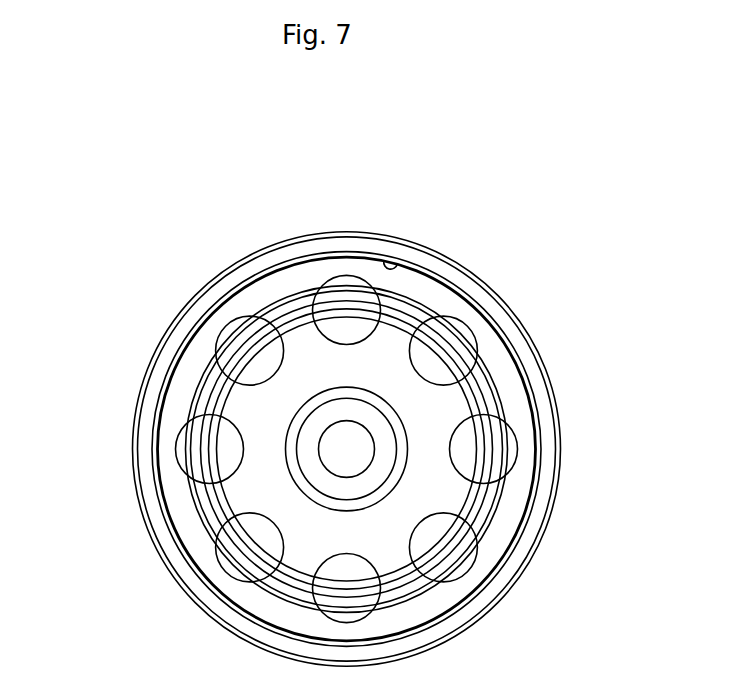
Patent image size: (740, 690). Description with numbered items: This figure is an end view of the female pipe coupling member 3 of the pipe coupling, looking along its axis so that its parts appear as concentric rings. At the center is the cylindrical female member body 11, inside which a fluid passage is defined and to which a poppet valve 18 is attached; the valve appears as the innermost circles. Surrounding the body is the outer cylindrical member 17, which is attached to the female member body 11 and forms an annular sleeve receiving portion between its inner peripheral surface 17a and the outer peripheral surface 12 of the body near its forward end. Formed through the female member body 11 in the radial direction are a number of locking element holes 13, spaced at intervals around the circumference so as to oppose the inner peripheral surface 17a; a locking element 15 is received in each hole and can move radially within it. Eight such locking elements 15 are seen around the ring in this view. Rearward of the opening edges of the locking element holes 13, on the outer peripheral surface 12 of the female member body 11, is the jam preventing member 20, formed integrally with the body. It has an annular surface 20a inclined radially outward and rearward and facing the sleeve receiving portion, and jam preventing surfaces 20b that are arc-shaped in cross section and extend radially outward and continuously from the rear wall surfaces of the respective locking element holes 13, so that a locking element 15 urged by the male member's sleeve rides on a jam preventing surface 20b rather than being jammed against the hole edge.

The female pipe coupling member 3 is at (272, 208).
The female member body 11 is at (290, 325).
The outer peripheral surface 12 is at (548, 342).
The locking element holes 13 is at (262, 333).
The locking elements 15 is at (228, 448).
The outer cylindrical member 17 is at (360, 245).
The inner peripheral surface 17a is at (400, 268).
The poppet valve 18 is at (348, 452).
The jam preventing member 20 is at (445, 298).
The annular surface 20a is at (443, 300).
The jam preventing surfaces 20b is at (346, 276).